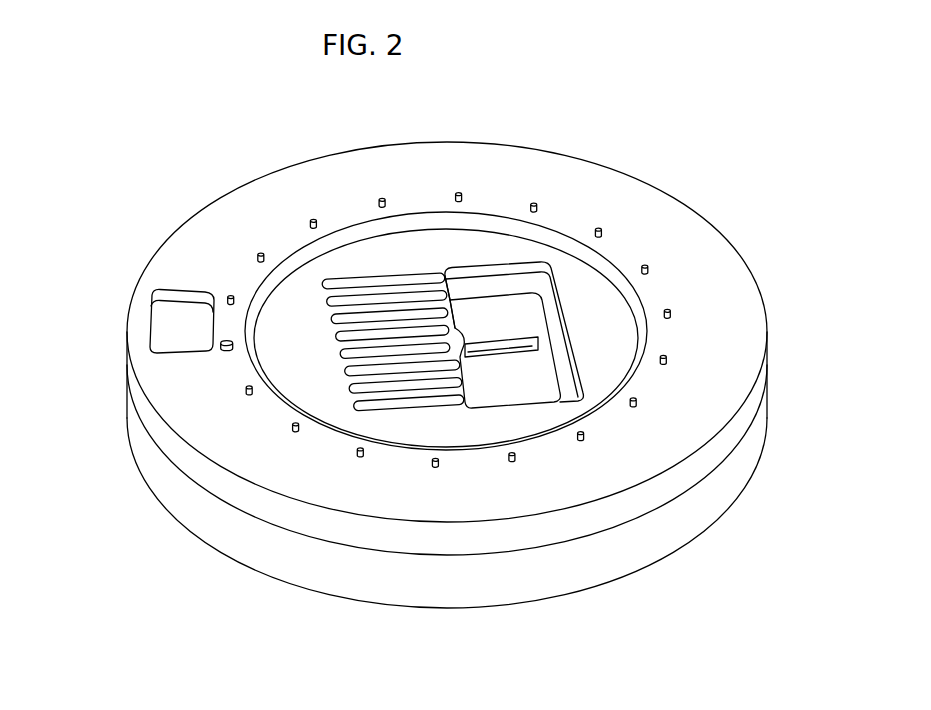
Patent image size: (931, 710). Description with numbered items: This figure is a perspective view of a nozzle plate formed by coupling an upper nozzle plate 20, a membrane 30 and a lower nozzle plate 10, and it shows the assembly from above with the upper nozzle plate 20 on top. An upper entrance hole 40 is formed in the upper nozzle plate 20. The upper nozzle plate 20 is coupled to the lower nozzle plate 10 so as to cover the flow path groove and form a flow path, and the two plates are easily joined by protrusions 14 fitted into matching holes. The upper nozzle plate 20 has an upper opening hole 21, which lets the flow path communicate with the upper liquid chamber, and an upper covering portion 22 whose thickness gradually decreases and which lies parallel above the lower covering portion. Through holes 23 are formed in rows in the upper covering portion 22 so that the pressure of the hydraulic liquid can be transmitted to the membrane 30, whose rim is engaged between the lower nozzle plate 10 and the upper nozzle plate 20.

The lower nozzle plate 10 is at (245, 538).
The upper nozzle plate 20 is at (690, 252).
The protrusions 14 is at (601, 226).
The upper opening hole 21 is at (521, 281).
The upper covering portion 22 is at (446, 282).
The through holes 23 is at (358, 303).
The membrane 30 is at (537, 377).
The upper entrance hole 40 is at (176, 325).